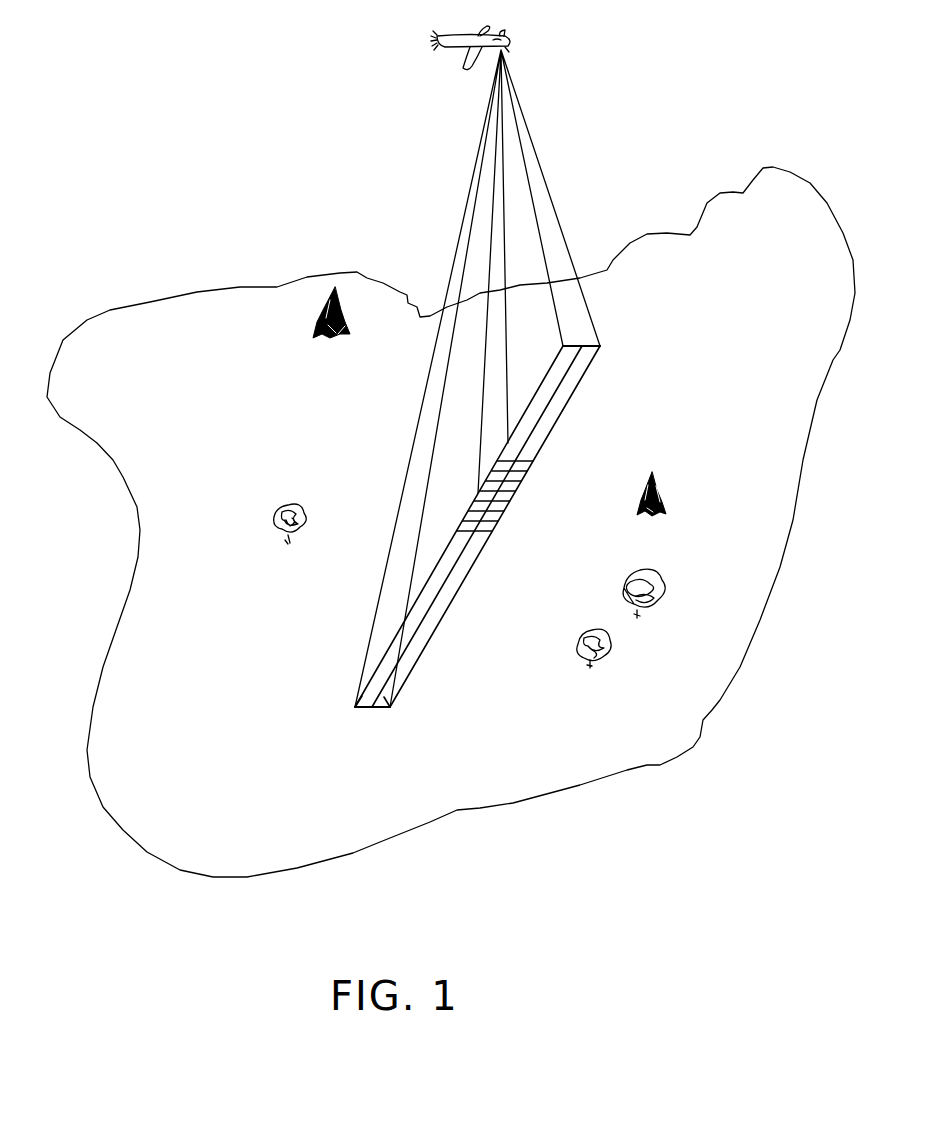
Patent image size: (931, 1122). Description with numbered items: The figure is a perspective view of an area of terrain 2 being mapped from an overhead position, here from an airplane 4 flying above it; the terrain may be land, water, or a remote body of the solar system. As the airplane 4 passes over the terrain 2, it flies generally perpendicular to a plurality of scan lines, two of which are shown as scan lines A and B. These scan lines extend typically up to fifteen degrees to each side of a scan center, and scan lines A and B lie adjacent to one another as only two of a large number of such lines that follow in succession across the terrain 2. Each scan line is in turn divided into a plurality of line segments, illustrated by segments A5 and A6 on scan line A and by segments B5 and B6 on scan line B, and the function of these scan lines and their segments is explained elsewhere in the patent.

The terrain 2 is at (715, 703).
The airplane 4 is at (495, 30).
The scan line A is at (362, 708).
The scan line B is at (383, 708).
The line segment A5 is at (498, 462).
The line segment A6 is at (497, 473).
The line segment B5 is at (520, 465).
The line segment B6 is at (520, 477).